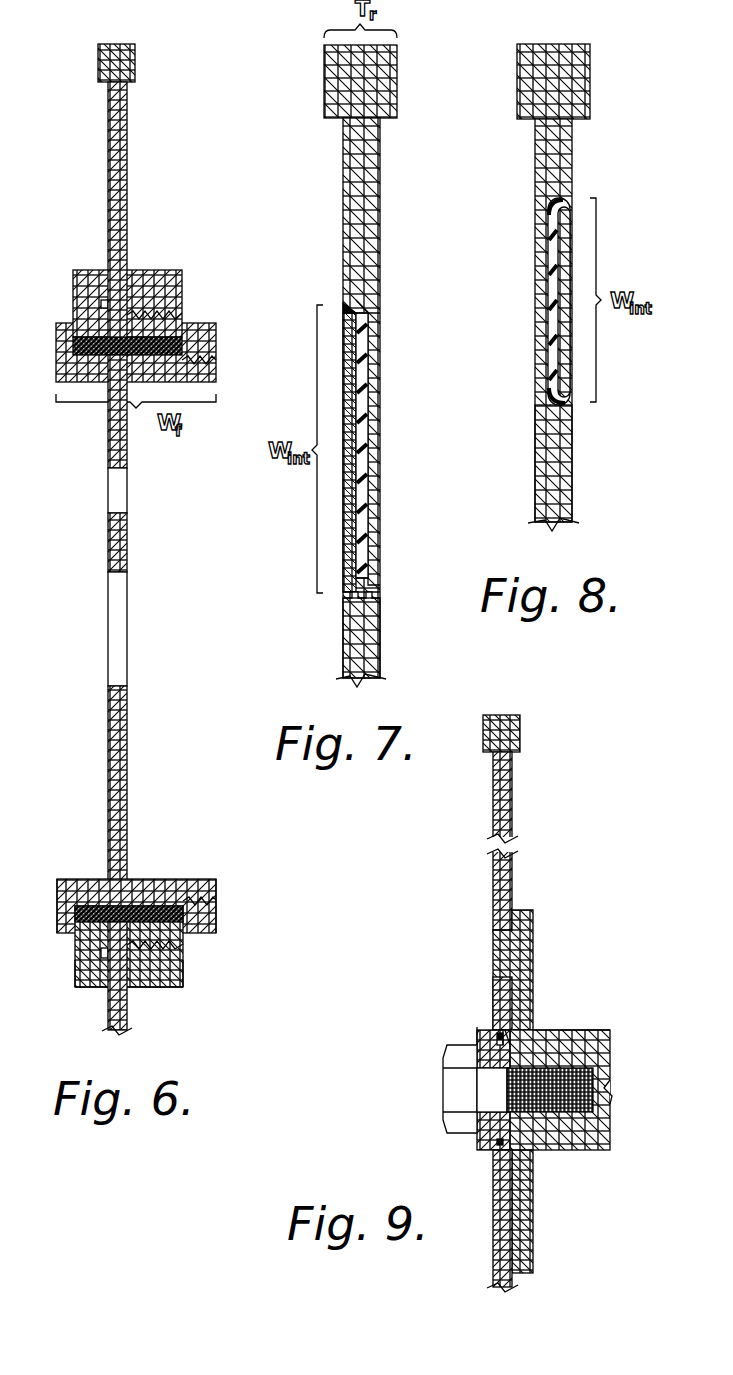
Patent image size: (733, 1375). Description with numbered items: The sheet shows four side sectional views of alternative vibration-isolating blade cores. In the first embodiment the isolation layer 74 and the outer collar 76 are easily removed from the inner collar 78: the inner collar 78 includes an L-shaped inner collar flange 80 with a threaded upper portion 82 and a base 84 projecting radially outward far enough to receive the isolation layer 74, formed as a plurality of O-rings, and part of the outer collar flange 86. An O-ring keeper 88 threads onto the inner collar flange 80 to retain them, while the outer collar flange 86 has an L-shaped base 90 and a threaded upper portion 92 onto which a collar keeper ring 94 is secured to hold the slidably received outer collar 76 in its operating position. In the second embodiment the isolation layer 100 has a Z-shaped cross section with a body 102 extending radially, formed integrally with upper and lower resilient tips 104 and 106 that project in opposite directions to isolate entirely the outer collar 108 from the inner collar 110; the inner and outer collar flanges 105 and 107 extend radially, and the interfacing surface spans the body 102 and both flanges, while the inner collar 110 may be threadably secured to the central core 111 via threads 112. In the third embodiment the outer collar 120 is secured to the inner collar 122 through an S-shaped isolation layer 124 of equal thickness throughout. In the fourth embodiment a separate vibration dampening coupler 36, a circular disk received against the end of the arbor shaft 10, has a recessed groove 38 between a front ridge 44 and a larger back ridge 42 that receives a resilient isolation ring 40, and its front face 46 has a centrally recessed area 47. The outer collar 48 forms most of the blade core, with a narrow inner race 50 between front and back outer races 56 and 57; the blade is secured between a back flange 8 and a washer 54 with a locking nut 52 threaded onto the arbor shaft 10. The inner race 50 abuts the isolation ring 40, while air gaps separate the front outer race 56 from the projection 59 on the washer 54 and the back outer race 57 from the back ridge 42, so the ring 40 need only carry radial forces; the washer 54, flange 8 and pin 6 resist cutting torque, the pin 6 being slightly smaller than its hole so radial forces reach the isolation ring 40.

In FIG. 6, the inner collar 78 is at (120, 746).
In FIG. 6, the isolation layer 74 is at (105, 906).
In FIG. 6, the inner collar flange 80 is at (70, 886).
In FIG. 6, the upper portion 82 is at (200, 895).
In FIG. 6, the base 84 is at (57, 891).
In FIG. 6, the outer collar flange 86 is at (85, 936).
In FIG. 6, the O-ring keeper 88 is at (210, 921).
In FIG. 6, the L-shaped base 90 is at (75, 979).
In FIG. 6, the threaded upper portion 92 is at (168, 936).
In FIG. 6, the collar keeper ring 94 is at (172, 983).
In FIG. 6, the outer collar 76 is at (121, 1031).
In FIG. 7, the outer collar 108 is at (357, 146).
In FIG. 7, the upper resilient tip 104 is at (357, 303).
In FIG. 7, the isolation layer 100 is at (350, 378).
In FIG. 7, the outer collar flange 107 is at (373, 412).
In FIG. 7, the body 102 is at (362, 463).
In FIG. 7, the inner collar flange 105 is at (350, 528).
In FIG. 7, the lower resilient tip 106 is at (373, 584).
In FIG. 7, the threads 112 is at (368, 600).
In FIG. 7, the inner collar 110 is at (334, 635).
In FIG. 7, the central core 111 is at (372, 660).
In FIG. 8, the outer collar 120 is at (546, 150).
In FIG. 8, the isolation layer 124 is at (556, 230).
In FIG. 8, the inner collar 122 is at (548, 432).
In FIG. 9, the outer collar 48 is at (511, 864).
In FIG. 9, the back flange 8 is at (527, 913).
In FIG. 9, the pin 6 is at (495, 941).
In FIG. 9, the arbor shaft 10 is at (607, 1030).
In FIG. 9, the isolation ring 40 is at (497, 1046).
In FIG. 9, the centrally recessed area 47 is at (490, 1120).
In FIG. 9, the locking nut 52 is at (446, 1100).
In FIG. 9, the vibration dampening coupler 36 is at (512, 1120).
In FIG. 9, the washer 54 is at (483, 1160).
In FIG. 9, the front outer race 56 is at (494, 1029).
In FIG. 9, the projection 59 is at (500, 1036).
In FIG. 9, the inner race 50 is at (503, 1030).
In FIG. 9, the back outer race 57 is at (512, 1030).
In FIG. 9, the back ridge 42 is at (540, 1035).
In FIG. 9, the recessed groove 38 is at (560, 1036).
In FIG. 9, the front ridge 44 is at (497, 1038).
In FIG. 9, the front face 46 is at (492, 1147).